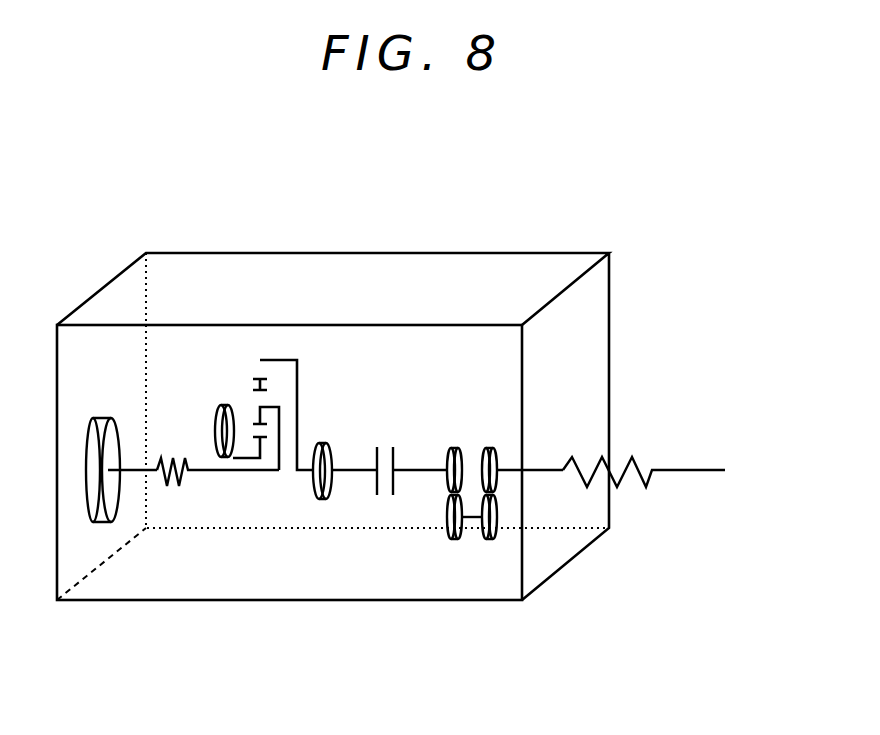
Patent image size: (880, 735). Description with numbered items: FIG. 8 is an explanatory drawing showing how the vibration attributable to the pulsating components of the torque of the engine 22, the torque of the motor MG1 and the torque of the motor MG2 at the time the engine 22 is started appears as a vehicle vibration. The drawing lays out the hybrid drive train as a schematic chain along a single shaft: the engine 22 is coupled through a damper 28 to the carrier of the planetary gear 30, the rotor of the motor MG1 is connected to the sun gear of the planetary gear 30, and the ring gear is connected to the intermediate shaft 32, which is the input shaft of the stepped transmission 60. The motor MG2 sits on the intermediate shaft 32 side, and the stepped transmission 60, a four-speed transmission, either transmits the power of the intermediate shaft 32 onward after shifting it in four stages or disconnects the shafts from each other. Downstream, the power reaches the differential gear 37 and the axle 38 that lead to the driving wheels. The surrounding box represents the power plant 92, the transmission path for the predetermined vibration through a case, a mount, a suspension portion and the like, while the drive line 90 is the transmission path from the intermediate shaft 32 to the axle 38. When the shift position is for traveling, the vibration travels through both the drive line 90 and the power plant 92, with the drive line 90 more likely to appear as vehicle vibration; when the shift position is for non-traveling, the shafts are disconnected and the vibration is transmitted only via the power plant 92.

The engine 22 is at (102, 422).
The damper 28 is at (163, 458).
The motor MG1 is at (222, 405).
The planetary gear 30 is at (270, 345).
The motor MG2 is at (320, 443).
The intermediate shaft 32 is at (352, 470).
The stepped transmission 60 is at (391, 441).
The differential gear 37 is at (476, 442).
The axle 38 is at (639, 468).
The drive line 90 is at (415, 510).
The power plant 92 is at (536, 283).